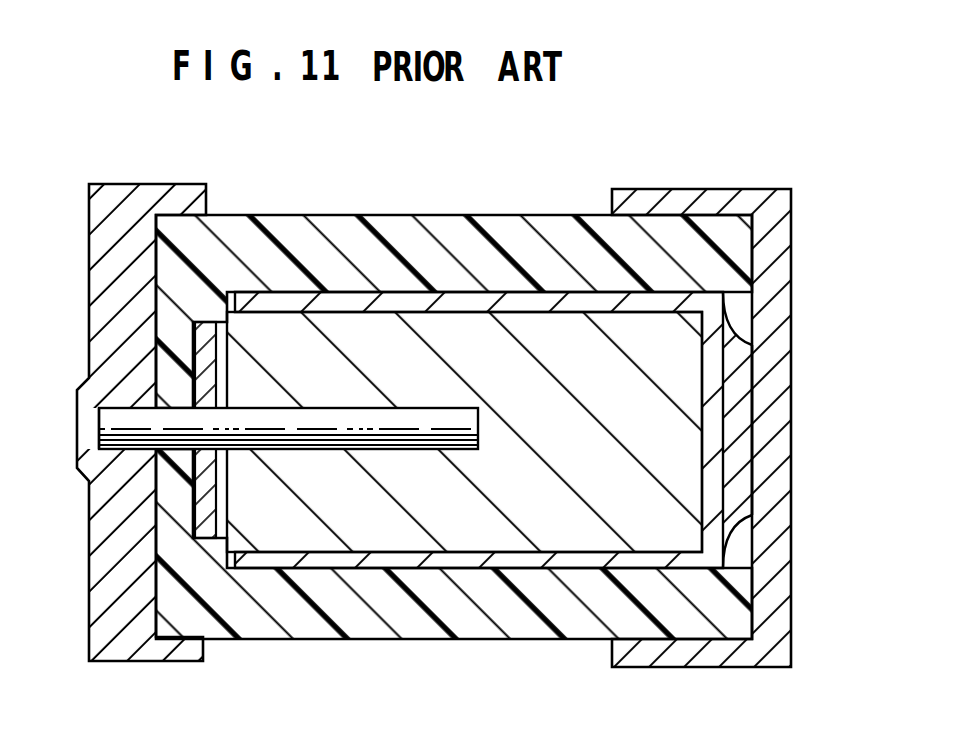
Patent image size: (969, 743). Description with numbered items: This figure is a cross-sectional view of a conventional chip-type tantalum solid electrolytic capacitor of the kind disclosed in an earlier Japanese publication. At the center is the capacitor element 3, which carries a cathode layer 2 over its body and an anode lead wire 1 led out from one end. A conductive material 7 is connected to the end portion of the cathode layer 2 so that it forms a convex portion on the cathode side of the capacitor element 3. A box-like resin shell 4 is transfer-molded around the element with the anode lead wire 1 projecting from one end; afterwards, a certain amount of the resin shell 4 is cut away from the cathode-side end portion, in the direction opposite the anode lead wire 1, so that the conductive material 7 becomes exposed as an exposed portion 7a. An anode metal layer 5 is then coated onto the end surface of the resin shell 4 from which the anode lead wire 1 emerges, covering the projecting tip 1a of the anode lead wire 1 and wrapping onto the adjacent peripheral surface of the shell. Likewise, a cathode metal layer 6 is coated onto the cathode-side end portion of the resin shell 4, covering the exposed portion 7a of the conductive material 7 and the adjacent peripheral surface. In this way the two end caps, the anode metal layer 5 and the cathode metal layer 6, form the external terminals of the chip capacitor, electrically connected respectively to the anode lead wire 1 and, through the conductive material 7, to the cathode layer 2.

The anode lead wire 1 is at (257, 438).
The projecting tip 1a is at (103, 430).
The cathode layer 2 is at (386, 562).
The capacitor element 3 is at (410, 327).
The resin shell 4 is at (288, 234).
The anode metal layer 5 is at (141, 203).
The cathode metal layer 6 is at (778, 547).
The conductive material 7 is at (740, 375).
The exposed portion 7a is at (752, 455).